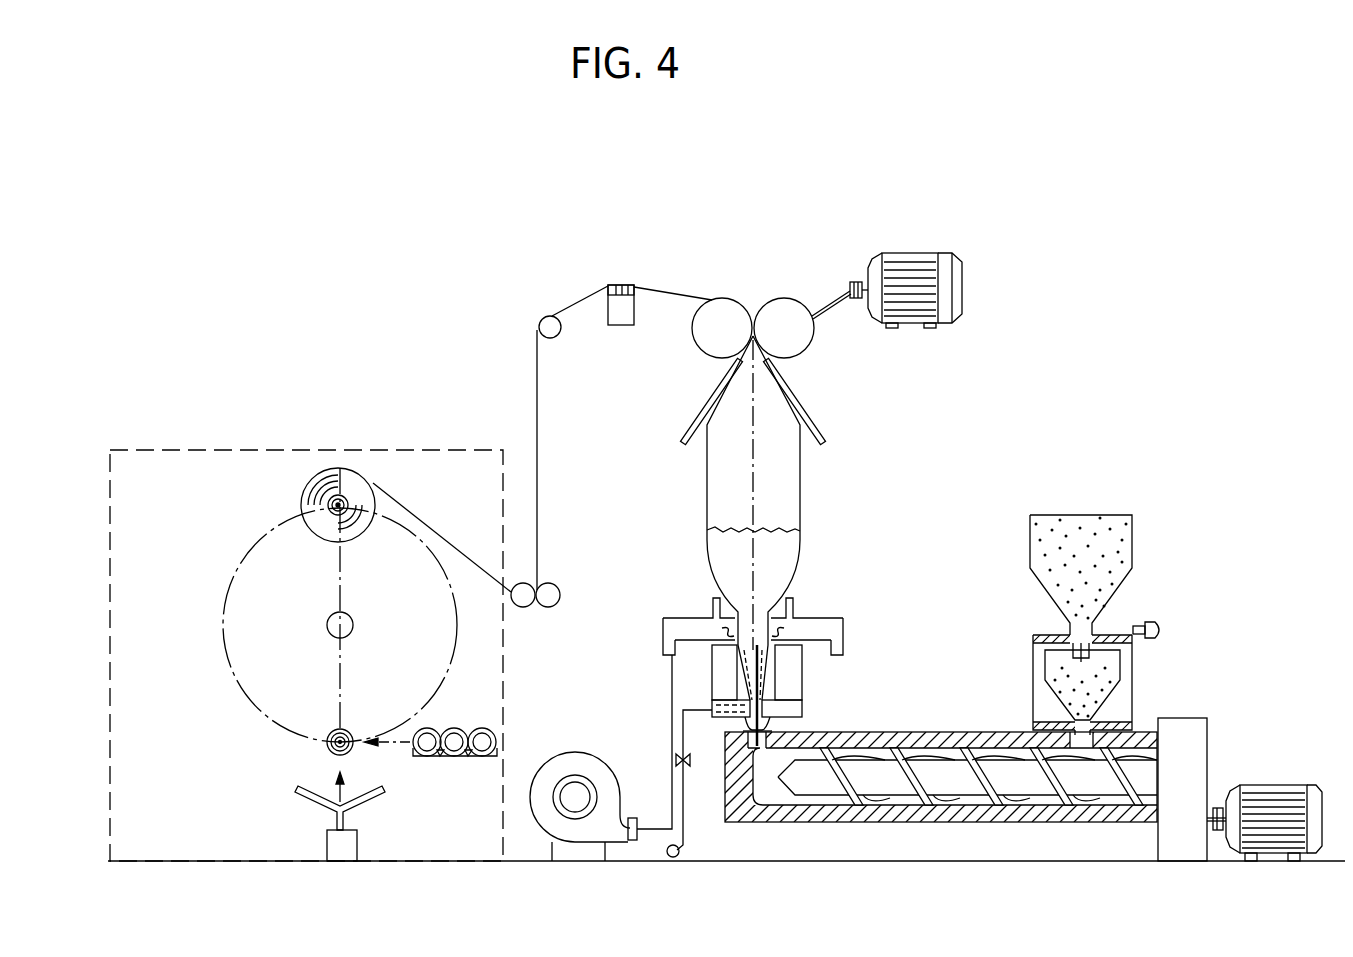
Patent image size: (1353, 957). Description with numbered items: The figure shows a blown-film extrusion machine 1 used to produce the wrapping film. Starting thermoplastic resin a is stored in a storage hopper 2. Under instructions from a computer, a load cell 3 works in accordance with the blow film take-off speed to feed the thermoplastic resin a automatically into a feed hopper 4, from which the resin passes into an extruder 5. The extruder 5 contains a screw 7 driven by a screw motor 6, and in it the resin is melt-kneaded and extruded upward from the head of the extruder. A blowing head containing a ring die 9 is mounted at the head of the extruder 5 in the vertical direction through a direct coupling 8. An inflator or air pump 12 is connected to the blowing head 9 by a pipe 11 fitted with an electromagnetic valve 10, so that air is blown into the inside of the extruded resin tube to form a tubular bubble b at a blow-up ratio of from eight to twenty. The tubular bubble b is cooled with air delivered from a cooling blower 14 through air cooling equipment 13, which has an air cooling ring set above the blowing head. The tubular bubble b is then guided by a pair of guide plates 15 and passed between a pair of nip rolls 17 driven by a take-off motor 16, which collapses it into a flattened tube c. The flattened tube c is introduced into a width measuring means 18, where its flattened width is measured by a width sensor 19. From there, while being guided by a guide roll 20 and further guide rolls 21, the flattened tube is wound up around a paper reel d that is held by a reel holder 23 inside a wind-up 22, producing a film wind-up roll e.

The blown-film extrusion machine 1 is at (758, 247).
The storage hopper 2 is at (1132, 519).
The load cell 3 is at (1042, 660).
The feed hopper 4 is at (1108, 681).
The extruder 5 is at (966, 820).
The screw motor 6 is at (1275, 785).
The screw 7 is at (943, 766).
The direct coupling 8 is at (776, 723).
The blowing head containing ring die 9 is at (803, 676).
The electromagnetic valve 10 is at (690, 765).
The pipe 11 is at (690, 826).
The inflator (air pump) 12 is at (670, 859).
The air cooling equipment 13 is at (848, 628).
The cooling blower 14 is at (567, 762).
The guide plates 15 is at (700, 414).
The take-off motor 16 is at (913, 254).
The nip rolls 17 is at (700, 331).
The width measuring means 18 is at (621, 326).
The width sensor 19 is at (621, 284).
The guide roll 20 is at (544, 319).
The guide rolls 21 is at (556, 602).
The wind-up 22 is at (352, 450).
The reel holder 23 is at (328, 505).
The thermoplastic resin a is at (1118, 559).
The tubular bubble b is at (801, 500).
The flattened tube c is at (690, 292).
The paper reel d is at (373, 484).
The film wind-up roll e is at (312, 486).